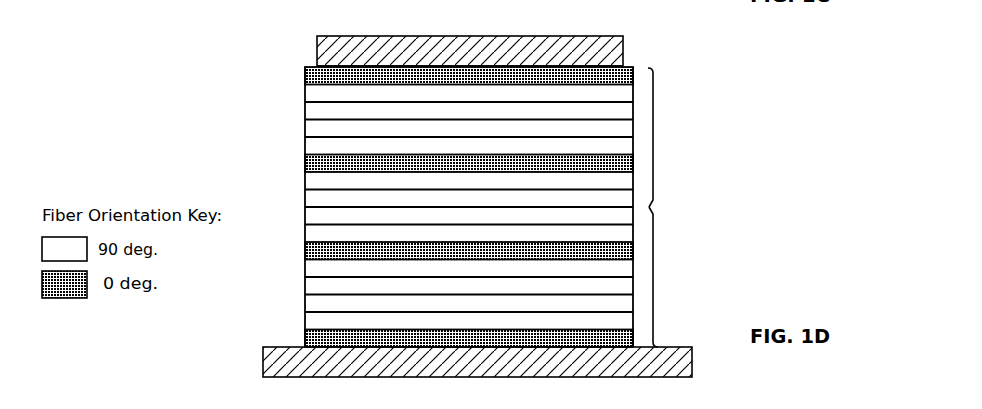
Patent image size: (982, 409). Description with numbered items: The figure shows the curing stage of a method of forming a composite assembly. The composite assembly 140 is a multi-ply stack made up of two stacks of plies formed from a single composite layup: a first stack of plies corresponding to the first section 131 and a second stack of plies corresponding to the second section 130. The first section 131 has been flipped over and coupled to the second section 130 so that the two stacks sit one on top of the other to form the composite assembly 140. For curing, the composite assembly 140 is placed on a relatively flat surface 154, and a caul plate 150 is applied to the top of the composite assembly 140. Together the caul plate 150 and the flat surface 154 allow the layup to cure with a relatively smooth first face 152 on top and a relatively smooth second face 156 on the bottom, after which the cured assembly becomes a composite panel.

The second section 130 is at (480, 277).
The first section 131 is at (653, 137).
The composite assembly 140 is at (444, 207).
The caul plate 150 is at (331, 36).
The first face 152 is at (424, 36).
The flat surface 154 is at (276, 325).
The second face 156 is at (342, 330).